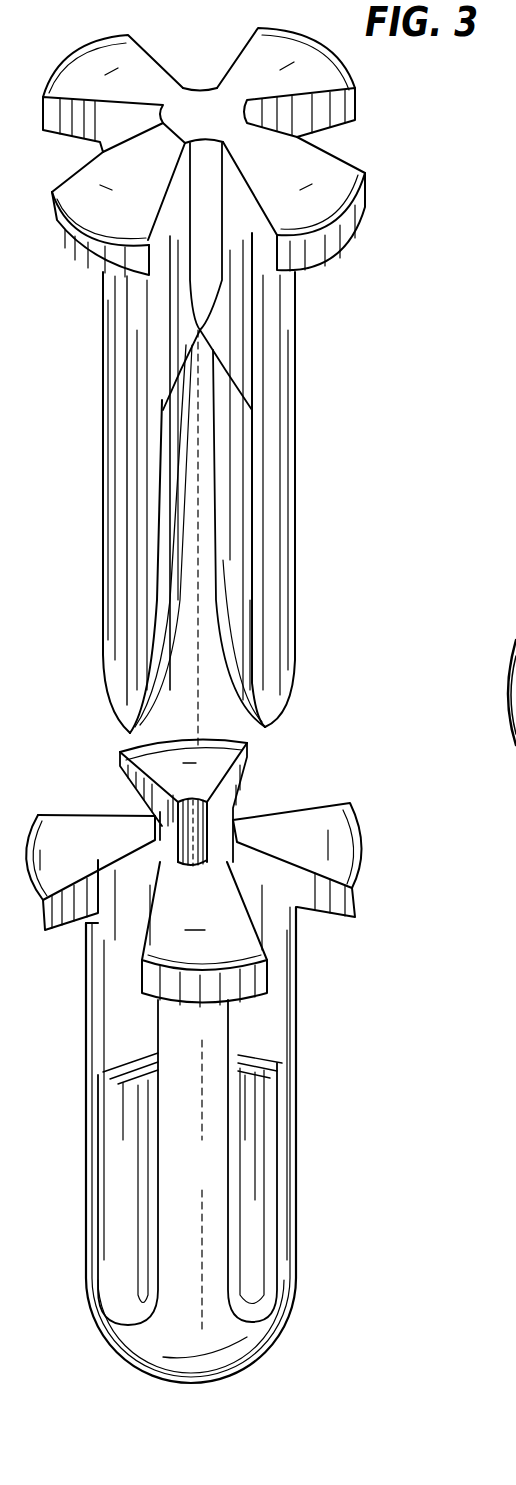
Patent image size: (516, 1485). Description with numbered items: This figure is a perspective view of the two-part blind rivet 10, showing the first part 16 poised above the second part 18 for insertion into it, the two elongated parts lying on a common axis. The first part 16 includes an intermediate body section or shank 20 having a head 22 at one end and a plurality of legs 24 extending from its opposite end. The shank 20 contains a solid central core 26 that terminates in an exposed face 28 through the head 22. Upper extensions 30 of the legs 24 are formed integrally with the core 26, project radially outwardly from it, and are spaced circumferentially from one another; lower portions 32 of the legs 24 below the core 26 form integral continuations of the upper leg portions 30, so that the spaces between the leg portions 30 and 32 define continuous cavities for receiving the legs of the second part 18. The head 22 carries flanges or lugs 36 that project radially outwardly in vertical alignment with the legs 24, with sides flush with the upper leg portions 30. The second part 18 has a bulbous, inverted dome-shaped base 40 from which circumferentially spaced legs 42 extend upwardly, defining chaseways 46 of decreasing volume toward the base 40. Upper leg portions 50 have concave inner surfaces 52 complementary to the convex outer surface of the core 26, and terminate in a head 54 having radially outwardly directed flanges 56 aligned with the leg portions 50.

The two-part blind rivet 10 is at (360, 420).
The first part 16 is at (103, 345).
The second part 18 is at (297, 1122).
The intermediate body section or shank 20 is at (275, 292).
The head 22 is at (313, 115).
The legs 24 is at (273, 635).
The solid central core 26 is at (205, 298).
The exposed face 28 is at (199, 94).
The upper extensions of the legs 30 is at (135, 305).
The lower portions of the legs 32 is at (123, 512).
The flanges or lugs 36 is at (92, 48).
The base 40 is at (240, 1325).
The legs 42 is at (213, 1181).
The chaseways 46 is at (273, 1253).
The upper leg portions 50 is at (277, 917).
The inner surfaces 52 is at (220, 803).
The head 54 is at (137, 785).
The flanges 56 is at (340, 838).